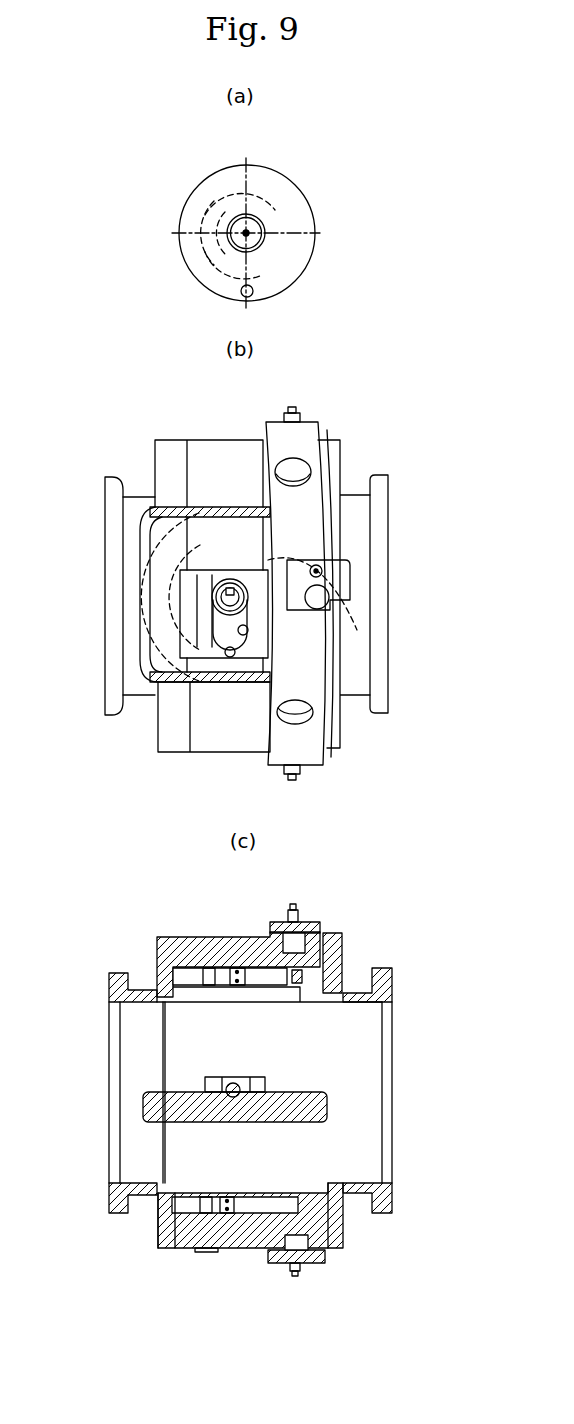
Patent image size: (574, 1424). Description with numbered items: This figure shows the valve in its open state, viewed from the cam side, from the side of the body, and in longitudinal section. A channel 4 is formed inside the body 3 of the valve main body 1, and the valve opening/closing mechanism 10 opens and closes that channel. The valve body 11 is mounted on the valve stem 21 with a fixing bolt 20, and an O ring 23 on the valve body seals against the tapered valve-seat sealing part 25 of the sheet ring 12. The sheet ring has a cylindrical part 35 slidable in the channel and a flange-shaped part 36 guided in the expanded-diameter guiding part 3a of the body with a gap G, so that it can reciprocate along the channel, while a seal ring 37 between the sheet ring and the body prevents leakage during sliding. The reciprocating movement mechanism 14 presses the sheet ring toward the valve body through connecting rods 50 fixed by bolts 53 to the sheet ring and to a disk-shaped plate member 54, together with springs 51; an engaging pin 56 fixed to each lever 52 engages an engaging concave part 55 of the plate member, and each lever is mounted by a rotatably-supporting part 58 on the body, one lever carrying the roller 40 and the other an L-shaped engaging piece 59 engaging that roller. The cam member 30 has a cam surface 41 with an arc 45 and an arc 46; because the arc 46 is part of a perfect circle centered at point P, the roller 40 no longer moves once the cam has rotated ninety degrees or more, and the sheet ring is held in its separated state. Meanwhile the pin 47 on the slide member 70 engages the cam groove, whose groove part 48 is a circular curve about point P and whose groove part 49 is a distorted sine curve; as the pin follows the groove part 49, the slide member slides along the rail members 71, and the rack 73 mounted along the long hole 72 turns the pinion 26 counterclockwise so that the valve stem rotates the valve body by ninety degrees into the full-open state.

The valve main body 1 is at (390, 560).
The body 3 is at (236, 742).
The guiding part 3a is at (177, 970).
The channel 4 is at (128, 1000).
The valve opening/closing mechanism 10 is at (332, 515).
The valve body 11 is at (238, 1120).
The sheet ring 12 is at (158, 980).
The reciprocating movement mechanism 14 is at (258, 1192).
The fixing bolt 20 is at (217, 1080).
The valve stem 21 is at (345, 655).
The O ring 23 is at (328, 1112).
The valve-seat sealing part 25 is at (182, 1010).
The pinion 26 is at (212, 598).
The cam member 30 is at (303, 213).
The cylindrical part 35 is at (197, 970).
The flange-shaped part 36 is at (157, 985).
The seal ring 37 is at (200, 1178).
The roller 40 is at (330, 598).
The cam surface 41 is at (272, 175).
The arc 45 is at (190, 283).
The arc 46 is at (307, 270).
The pin 47 is at (262, 293).
The groove part 48 is at (208, 208).
The groove part 49 is at (192, 267).
The connecting rod 50 is at (255, 962).
The spring 51 is at (255, 1218).
The lever 52 is at (305, 432).
The bolt 53 is at (308, 984).
The plate member 54 is at (345, 1205).
The engaging concave part 55 is at (284, 940).
The engaging pin 56 is at (292, 407).
The rotatably-supporting part 58 is at (300, 710).
The engaging piece 59 is at (323, 572).
The slide member 70 is at (205, 680).
The rail member 71 is at (258, 520).
The long hole 72 is at (242, 636).
The rack 73 is at (215, 650).
The point P is at (252, 222).
The gap G is at (168, 1245).